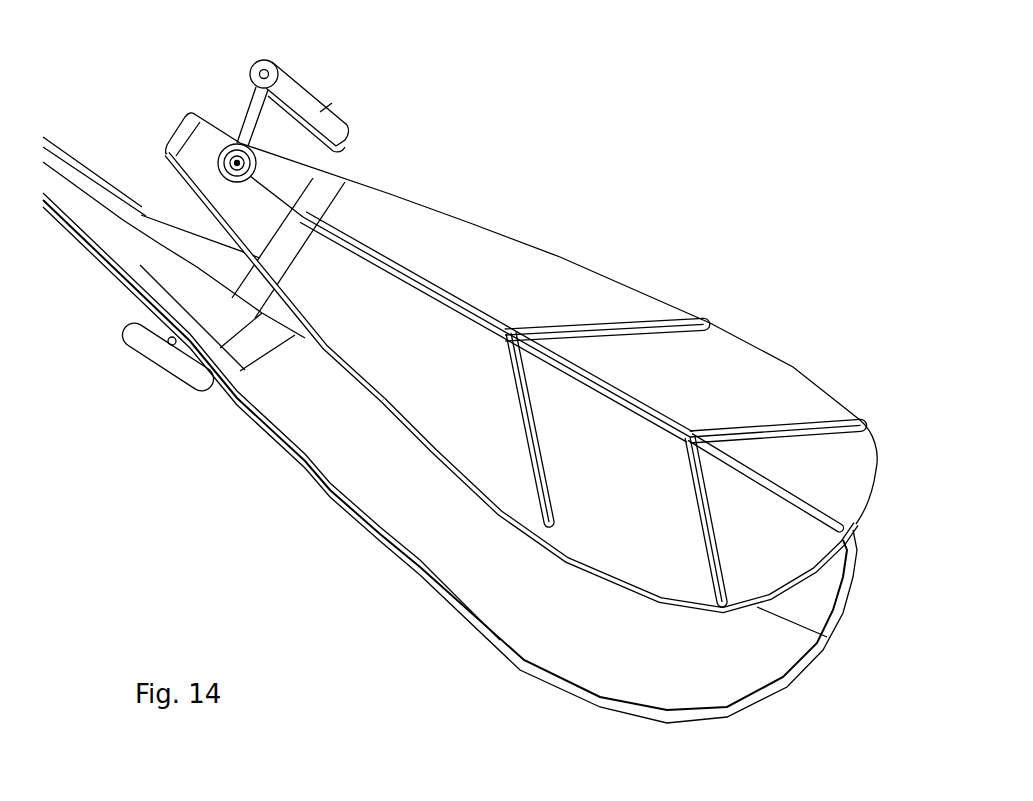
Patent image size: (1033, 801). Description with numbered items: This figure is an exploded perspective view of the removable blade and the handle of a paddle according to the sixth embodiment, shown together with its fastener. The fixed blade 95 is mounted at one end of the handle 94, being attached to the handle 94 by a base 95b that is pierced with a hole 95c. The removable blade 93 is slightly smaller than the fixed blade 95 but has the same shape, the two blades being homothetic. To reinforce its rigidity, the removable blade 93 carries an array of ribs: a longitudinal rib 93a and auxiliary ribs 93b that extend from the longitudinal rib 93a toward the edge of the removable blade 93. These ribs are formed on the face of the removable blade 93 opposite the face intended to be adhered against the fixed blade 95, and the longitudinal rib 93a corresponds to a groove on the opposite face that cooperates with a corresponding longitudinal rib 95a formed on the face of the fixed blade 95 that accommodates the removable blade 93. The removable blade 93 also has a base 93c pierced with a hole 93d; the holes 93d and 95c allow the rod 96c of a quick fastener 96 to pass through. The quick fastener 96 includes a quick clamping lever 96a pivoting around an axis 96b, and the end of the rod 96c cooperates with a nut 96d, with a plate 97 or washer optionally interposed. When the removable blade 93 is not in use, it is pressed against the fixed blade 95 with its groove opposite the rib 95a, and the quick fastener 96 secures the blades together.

The removable blade 93 is at (783, 380).
The longitudinal rib 93a is at (807, 500).
The auxiliary ribs 93b is at (767, 425).
The base 93c is at (197, 130).
The hole 93d is at (237, 165).
The handle 94 is at (72, 168).
The fixed blade 95 is at (757, 653).
The longitudinal rib 95a is at (305, 350).
The base 95b is at (140, 265).
The hole 95c is at (197, 267).
The quick fastener 96 is at (310, 83).
The quick clamping lever 96a is at (335, 103).
The axis 96b is at (250, 74).
The rod 96c is at (262, 118).
The nut 96d is at (152, 367).
The plate 97 is at (180, 365).